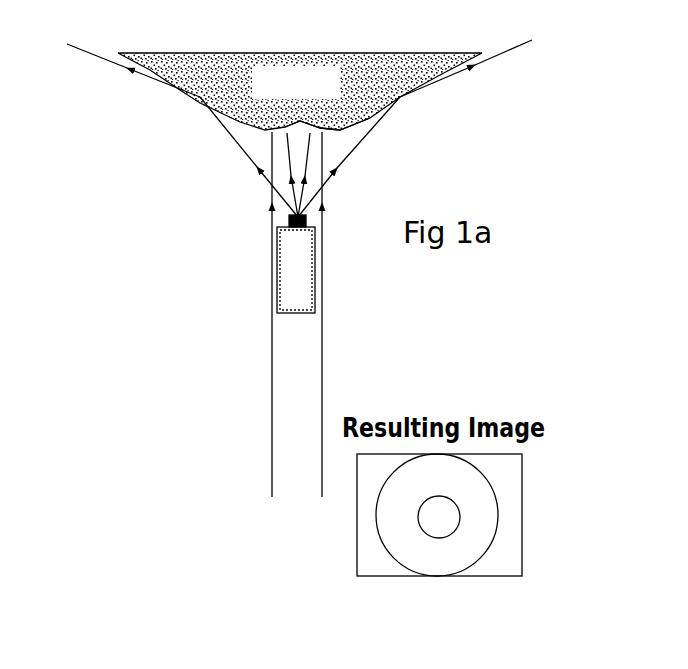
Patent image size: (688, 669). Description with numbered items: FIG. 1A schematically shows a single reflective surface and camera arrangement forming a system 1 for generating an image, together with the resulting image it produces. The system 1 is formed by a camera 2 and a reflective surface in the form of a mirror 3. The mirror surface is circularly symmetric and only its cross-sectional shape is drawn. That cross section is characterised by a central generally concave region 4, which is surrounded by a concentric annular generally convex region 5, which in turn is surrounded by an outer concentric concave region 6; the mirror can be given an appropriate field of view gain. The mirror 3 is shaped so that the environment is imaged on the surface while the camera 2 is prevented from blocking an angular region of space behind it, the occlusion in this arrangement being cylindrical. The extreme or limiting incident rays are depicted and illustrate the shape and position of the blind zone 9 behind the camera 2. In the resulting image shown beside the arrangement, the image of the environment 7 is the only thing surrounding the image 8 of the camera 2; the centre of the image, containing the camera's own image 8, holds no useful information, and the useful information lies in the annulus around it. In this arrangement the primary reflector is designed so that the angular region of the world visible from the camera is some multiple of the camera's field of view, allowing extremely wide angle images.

The system for generating an image 1 is at (165, 287).
The camera 2 is at (311, 281).
The mirror 3 is at (406, 56).
The central generally concave region 4 is at (299, 129).
The concentric annular general convex region 5 is at (342, 130).
The outer concentric concave region 6 is at (432, 78).
The image of the environment 7 is at (393, 516).
The image of the camera 8 is at (425, 525).
The blind zone 9 is at (310, 387).